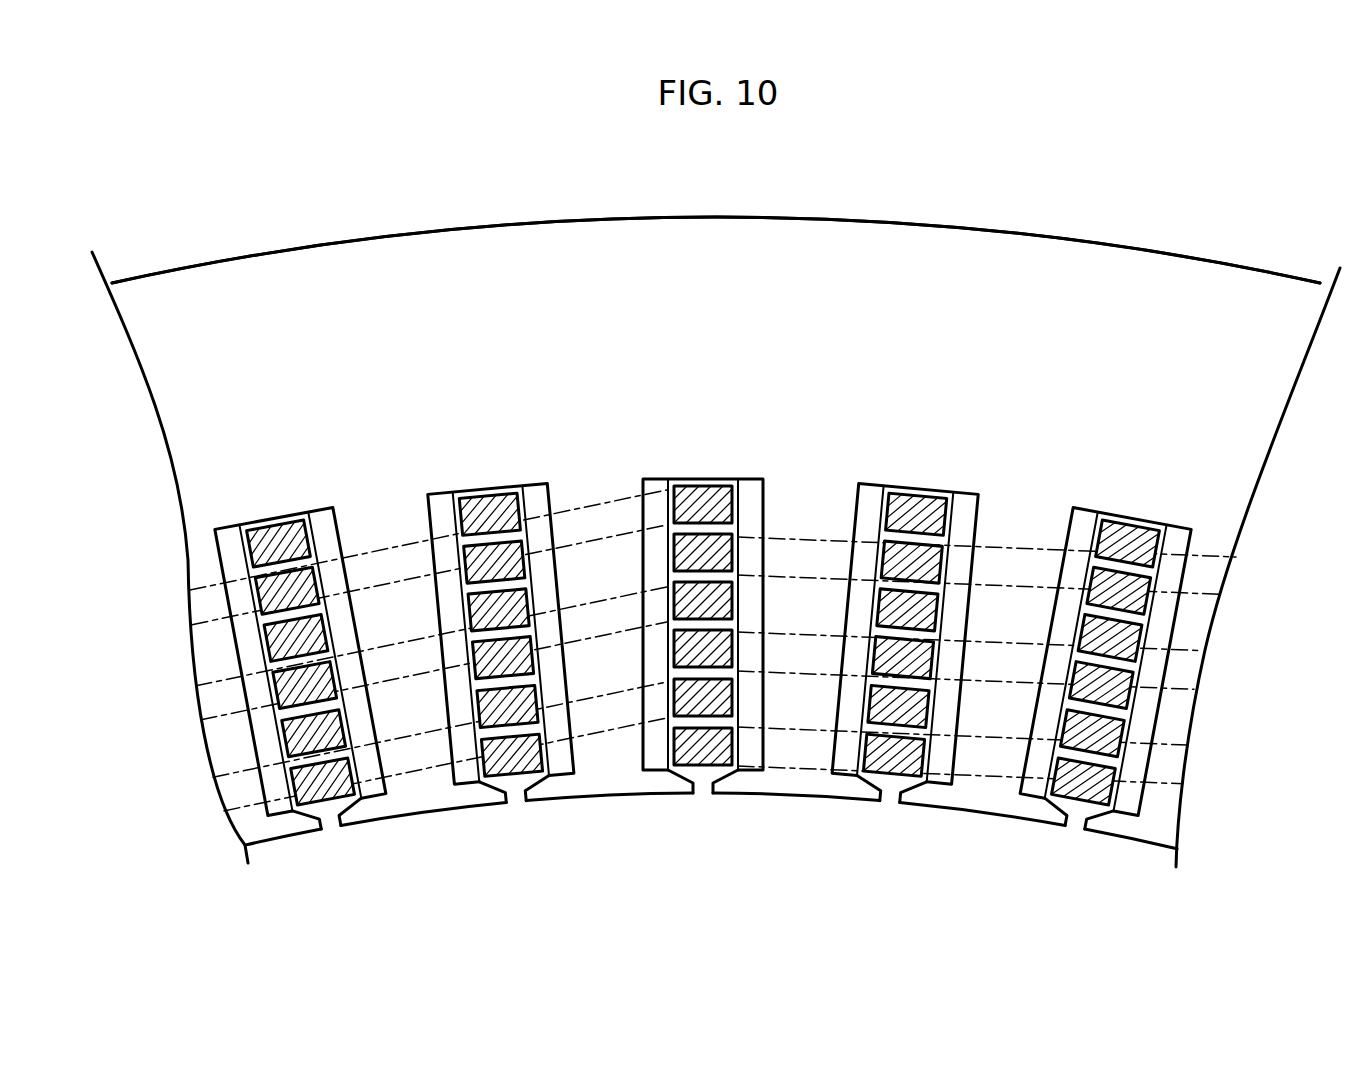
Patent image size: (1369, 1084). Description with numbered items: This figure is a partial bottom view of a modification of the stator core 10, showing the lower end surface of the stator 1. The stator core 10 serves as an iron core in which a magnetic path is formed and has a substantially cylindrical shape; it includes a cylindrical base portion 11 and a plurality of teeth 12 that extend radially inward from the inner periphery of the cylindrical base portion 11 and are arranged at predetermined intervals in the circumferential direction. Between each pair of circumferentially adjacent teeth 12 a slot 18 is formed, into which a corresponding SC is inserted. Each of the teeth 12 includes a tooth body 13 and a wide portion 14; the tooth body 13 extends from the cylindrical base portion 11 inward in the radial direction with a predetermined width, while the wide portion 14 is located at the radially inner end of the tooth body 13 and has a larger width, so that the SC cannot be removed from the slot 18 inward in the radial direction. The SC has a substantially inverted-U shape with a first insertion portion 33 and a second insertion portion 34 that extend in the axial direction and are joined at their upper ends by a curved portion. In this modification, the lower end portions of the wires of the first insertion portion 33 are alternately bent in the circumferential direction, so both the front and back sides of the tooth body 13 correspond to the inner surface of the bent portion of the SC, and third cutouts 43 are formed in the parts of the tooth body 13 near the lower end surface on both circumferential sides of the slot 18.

The stator 1 is at (713, 196).
The stator core 10 is at (847, 212).
The cylindrical base portion 11 is at (472, 230).
The teeth 12 is at (420, 832).
The tooth body 13 is at (612, 773).
The wide portion 14 is at (595, 772).
The slot 18 is at (470, 535).
The first insertion portion 33 is at (710, 600).
The second insertion portion 34 is at (705, 645).
The third cutouts 43 is at (470, 760).